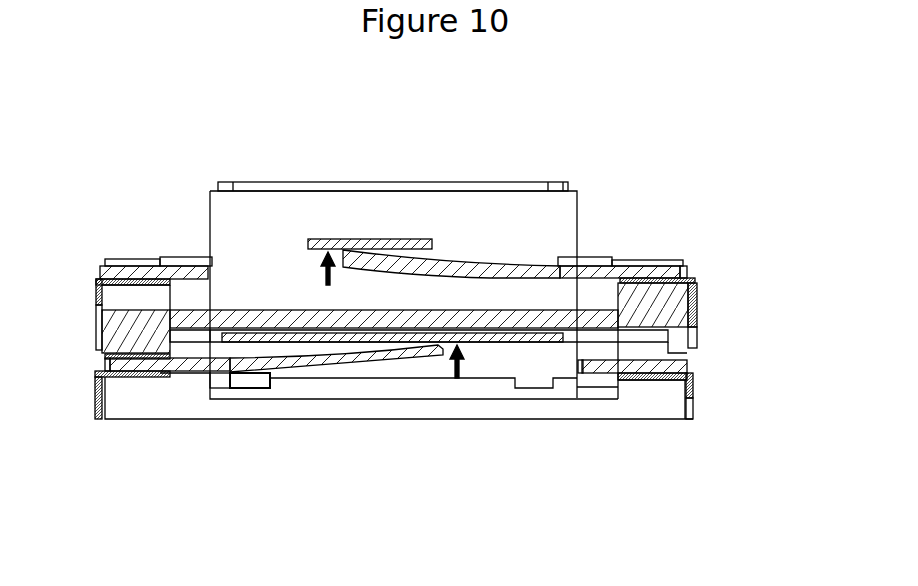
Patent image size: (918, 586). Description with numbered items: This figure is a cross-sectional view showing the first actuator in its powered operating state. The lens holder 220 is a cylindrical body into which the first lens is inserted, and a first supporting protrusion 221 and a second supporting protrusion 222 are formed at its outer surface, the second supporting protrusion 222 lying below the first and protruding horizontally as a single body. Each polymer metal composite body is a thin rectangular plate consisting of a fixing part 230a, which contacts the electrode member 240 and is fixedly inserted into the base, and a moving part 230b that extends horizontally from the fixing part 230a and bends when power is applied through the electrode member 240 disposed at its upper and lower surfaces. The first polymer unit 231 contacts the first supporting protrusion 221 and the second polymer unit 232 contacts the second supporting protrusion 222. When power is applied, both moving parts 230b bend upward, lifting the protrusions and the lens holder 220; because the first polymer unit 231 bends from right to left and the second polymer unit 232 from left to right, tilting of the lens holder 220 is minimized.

The lens holder 220 is at (260, 223).
The first supporting protrusion 221 is at (335, 245).
The second supporting protrusion 222 is at (505, 340).
The fixing part 230a is at (637, 270).
The moving part 230b is at (458, 267).
The first polymer unit 231 is at (585, 122).
The second polymer unit 232 is at (312, 503).
The electrode member 240 is at (697, 388).